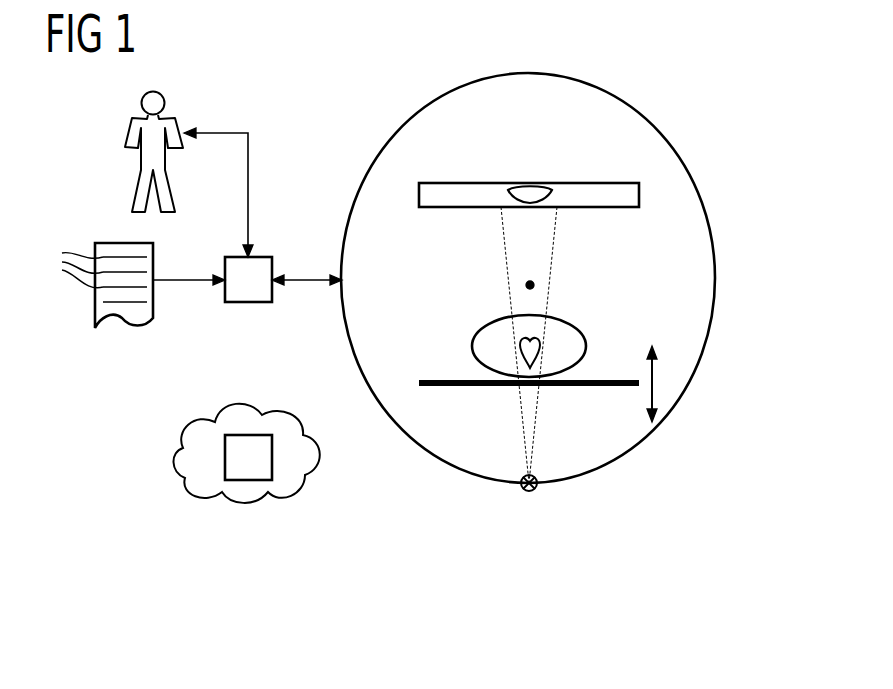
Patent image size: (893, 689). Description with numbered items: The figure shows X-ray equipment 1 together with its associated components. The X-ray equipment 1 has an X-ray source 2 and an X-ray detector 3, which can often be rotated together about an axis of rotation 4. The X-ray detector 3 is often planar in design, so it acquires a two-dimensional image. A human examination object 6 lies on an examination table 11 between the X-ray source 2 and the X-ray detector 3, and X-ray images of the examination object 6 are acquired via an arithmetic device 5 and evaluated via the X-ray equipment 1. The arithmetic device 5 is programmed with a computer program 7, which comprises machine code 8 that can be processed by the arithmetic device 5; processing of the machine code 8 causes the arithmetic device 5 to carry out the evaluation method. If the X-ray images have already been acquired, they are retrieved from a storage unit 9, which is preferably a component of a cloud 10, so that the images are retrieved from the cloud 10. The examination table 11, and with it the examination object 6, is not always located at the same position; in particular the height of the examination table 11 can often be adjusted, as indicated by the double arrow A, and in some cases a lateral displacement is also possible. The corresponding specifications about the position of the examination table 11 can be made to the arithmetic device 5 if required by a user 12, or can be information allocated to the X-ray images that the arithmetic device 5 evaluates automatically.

The X-ray equipment 1 is at (718, 179).
The X-ray source 2 is at (529, 492).
The X-ray detector 3 is at (617, 183).
The axis of rotation 4 is at (535, 285).
The arithmetic device 5 is at (250, 302).
The human examination object 6 is at (472, 350).
The computer program 7 is at (123, 318).
The machine code 8 is at (74, 264).
The storage unit 9 is at (250, 480).
The cloud 10 is at (173, 462).
The examination table 11 is at (432, 387).
The user 12 is at (128, 138).
The double arrow A is at (655, 382).